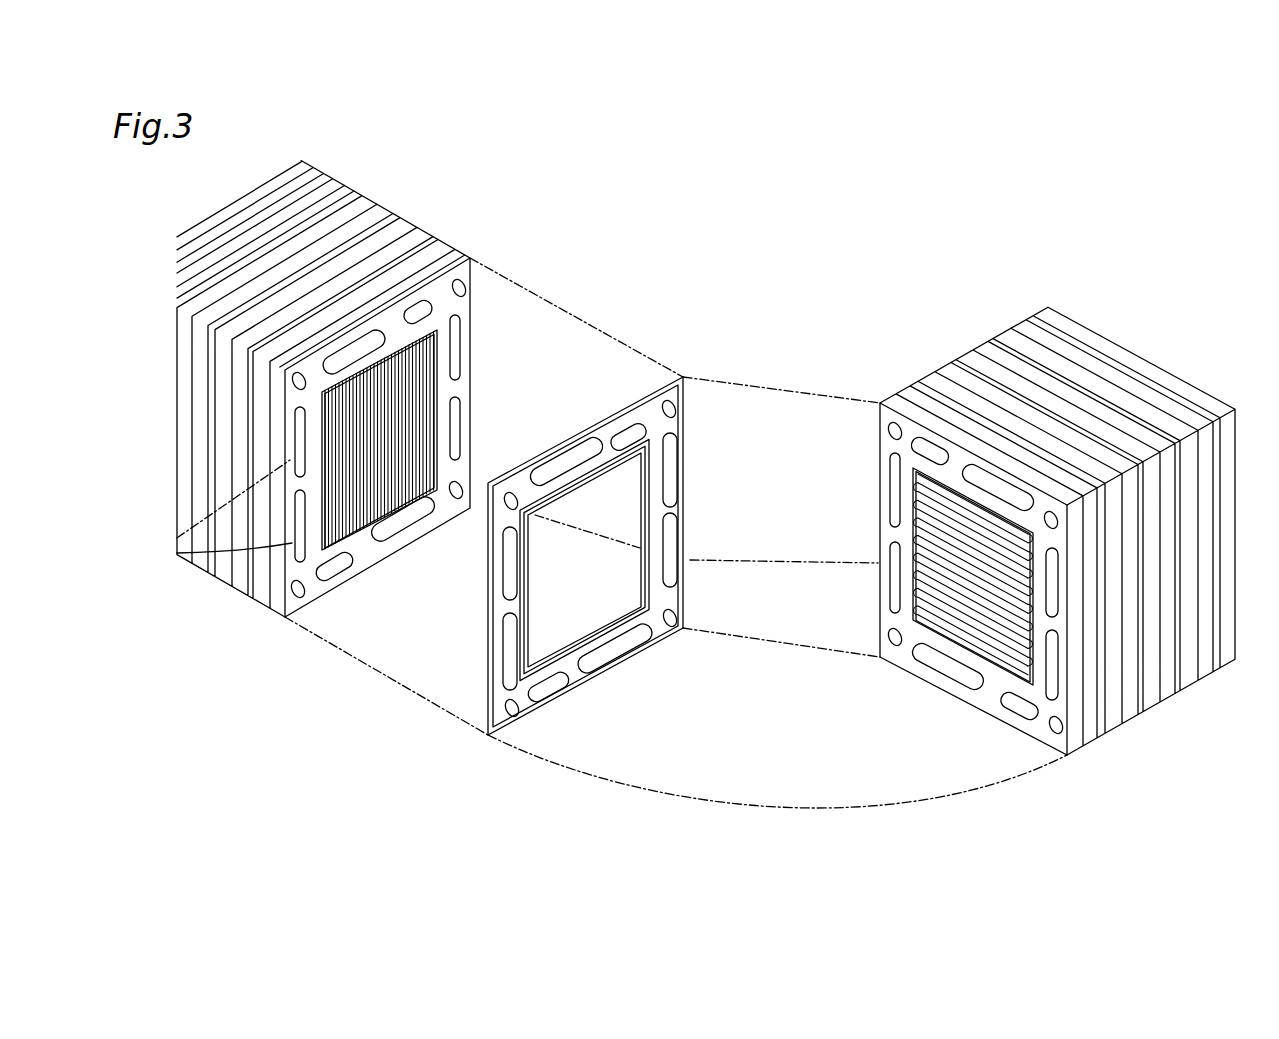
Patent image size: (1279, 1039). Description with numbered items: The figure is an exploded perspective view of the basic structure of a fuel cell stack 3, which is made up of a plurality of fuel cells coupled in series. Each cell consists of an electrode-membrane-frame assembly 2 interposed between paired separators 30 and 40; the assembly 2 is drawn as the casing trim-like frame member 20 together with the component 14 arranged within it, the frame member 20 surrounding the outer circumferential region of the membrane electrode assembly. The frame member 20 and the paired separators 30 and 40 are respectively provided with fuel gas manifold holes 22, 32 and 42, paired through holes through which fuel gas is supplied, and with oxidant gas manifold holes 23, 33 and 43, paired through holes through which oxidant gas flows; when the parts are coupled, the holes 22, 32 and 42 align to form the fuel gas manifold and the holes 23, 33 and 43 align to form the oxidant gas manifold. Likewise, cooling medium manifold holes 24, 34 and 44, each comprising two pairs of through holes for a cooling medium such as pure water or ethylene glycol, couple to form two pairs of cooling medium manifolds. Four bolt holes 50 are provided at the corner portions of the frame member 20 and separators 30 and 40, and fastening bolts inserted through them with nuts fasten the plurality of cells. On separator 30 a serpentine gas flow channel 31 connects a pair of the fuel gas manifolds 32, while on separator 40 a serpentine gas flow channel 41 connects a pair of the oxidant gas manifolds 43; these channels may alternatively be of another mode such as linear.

The electrode-membrane-frame assembly 2 is at (226, 750).
The fuel cell stack 3 is at (1087, 202).
The membrane electrode assembly 14 is at (490, 603).
The frame member 20 is at (490, 587).
The fuel gas manifold holes 22 is at (630, 430).
The oxidant gas manifold holes 23 is at (578, 460).
The cooling medium manifold holes 24 is at (684, 471).
The separator 30 is at (937, 682).
The gas flow channel 31 is at (882, 492).
The fuel gas manifold holes 32 is at (895, 438).
The oxidant gas manifold holes 33 is at (975, 476).
The cooling medium manifold holes 34 is at (887, 517).
The separator 40 is at (276, 617).
The gas flow channel 41 is at (393, 355).
The fuel gas manifold holes 42 is at (422, 305).
The oxidant gas manifold holes 43 is at (345, 355).
The cooling medium manifold holes 44 is at (472, 346).
The bolt holes 50 is at (464, 288).